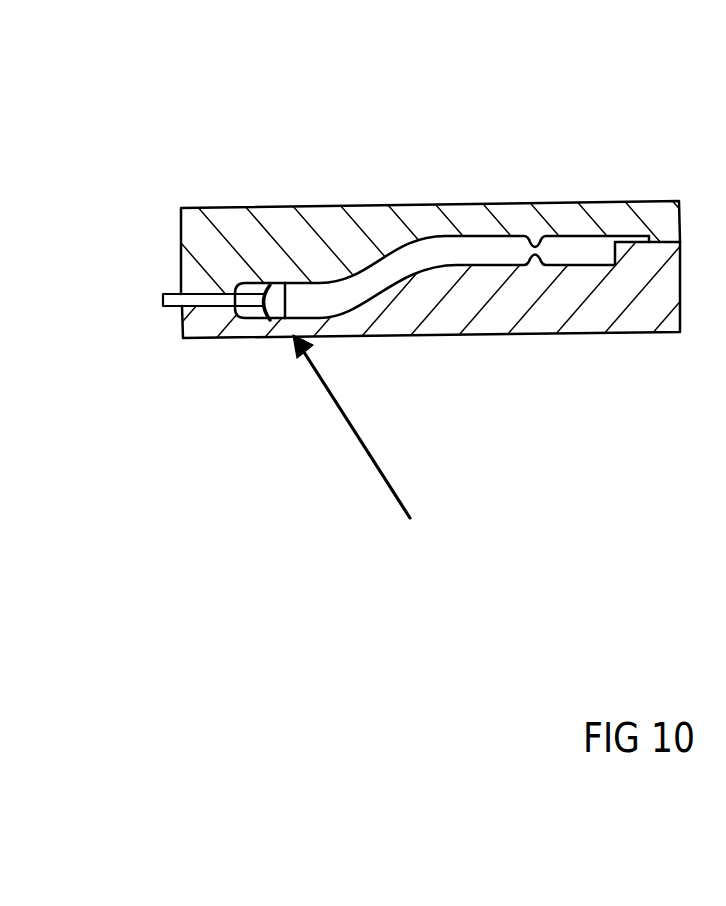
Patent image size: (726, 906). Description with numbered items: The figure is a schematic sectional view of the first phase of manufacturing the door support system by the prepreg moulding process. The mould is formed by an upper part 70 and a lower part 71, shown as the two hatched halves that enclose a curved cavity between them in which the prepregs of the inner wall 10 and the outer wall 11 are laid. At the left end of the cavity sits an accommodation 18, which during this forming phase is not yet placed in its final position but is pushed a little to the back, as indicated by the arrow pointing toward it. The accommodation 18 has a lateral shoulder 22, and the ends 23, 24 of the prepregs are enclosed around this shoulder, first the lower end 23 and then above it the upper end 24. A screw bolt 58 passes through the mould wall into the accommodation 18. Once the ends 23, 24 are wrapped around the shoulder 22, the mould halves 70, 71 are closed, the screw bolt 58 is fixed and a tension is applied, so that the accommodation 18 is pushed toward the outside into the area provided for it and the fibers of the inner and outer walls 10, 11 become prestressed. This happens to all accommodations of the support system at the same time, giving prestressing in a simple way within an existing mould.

The inner wall 10 is at (458, 265).
The outer wall 11 is at (430, 242).
The accommodation 18 is at (362, 452).
The lateral shoulder 22 is at (275, 308).
The lower end of prepreg 23 is at (264, 302).
The upper end of prepreg 24 is at (266, 290).
The screw bolt 58 is at (173, 302).
The upper part of mould 70 is at (521, 215).
The lower part of mould 71 is at (542, 315).